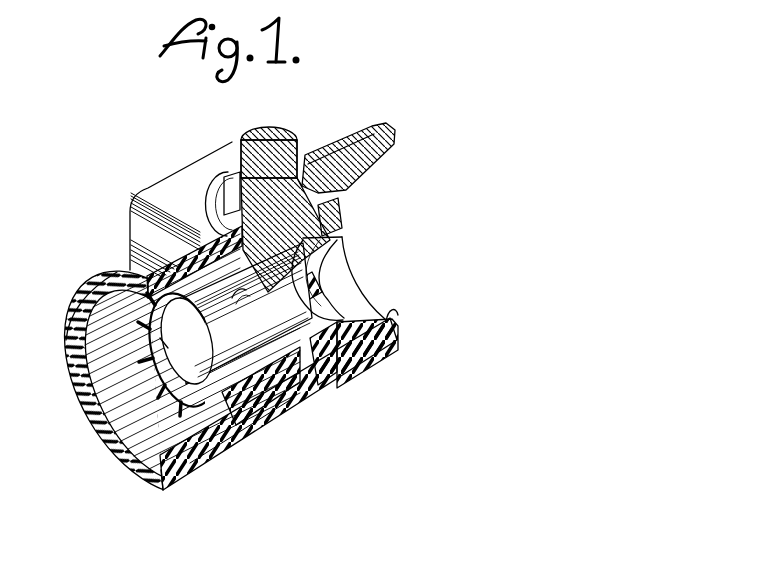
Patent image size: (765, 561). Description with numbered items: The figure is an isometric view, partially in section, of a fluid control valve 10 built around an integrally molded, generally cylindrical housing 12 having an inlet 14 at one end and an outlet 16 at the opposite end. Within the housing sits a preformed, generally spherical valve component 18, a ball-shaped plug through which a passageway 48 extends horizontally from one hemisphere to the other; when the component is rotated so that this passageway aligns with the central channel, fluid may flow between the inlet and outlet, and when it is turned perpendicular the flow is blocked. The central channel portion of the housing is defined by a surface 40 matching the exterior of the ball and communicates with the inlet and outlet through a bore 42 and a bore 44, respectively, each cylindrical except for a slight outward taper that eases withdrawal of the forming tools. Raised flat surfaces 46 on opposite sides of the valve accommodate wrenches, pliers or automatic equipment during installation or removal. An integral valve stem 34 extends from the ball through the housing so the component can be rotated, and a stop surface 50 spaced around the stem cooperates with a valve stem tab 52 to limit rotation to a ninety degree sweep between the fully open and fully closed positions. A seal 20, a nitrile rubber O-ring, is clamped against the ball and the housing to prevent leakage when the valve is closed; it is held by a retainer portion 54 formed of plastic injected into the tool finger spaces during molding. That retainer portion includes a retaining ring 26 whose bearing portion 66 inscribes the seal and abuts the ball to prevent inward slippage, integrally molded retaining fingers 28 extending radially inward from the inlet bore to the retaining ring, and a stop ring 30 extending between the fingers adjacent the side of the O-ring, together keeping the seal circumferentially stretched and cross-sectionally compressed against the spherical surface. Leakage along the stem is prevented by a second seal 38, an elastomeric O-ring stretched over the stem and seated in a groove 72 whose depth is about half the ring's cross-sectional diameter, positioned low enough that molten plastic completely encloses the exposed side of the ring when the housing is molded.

The fluid control valve 10 is at (315, 127).
The housing 12 is at (262, 427).
The inlet 14 is at (126, 394).
The outlet 16 is at (396, 276).
The valve component 18 is at (300, 400).
The seal 20 is at (330, 207).
The retaining ring 26 is at (218, 433).
The retaining fingers 28 is at (178, 405).
The stop ring 30 is at (182, 447).
The valve stem 34 is at (338, 232).
The seal 38 is at (220, 237).
The surface 40 is at (330, 380).
The bore 42 is at (117, 460).
The bore 44 is at (398, 315).
The raised flat surfaces 46 is at (170, 176).
The passageway 48 is at (250, 351).
The stop surface 50 is at (263, 124).
The valve stem tab 52 is at (236, 172).
The retainer portion 54 is at (163, 343).
The bearing portion 66 is at (240, 302).
The groove 72 is at (305, 252).